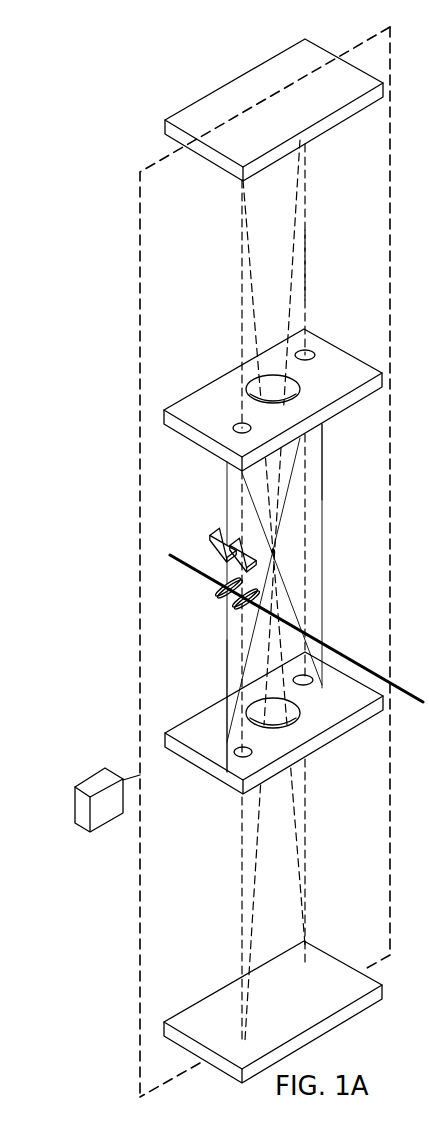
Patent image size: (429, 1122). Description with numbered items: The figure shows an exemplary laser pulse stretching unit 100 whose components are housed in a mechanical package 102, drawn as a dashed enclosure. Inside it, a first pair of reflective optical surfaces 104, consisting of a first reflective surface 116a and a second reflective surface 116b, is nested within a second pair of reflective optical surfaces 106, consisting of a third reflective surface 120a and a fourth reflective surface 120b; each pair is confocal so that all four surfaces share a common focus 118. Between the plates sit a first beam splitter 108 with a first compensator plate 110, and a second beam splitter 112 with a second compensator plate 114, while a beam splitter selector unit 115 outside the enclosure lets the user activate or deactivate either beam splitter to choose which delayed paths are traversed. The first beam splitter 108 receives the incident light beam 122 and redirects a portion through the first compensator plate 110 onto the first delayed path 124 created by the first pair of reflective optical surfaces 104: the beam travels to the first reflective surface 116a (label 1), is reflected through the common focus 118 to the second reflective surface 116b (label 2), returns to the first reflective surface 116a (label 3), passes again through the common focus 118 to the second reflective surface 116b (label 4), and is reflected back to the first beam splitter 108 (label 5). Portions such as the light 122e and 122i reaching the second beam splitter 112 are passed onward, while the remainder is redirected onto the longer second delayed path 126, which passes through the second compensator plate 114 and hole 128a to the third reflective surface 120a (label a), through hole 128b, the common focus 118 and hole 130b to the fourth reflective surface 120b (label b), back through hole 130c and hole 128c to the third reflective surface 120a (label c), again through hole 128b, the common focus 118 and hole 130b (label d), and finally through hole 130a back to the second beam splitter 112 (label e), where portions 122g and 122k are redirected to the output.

The laser pulse stretching unit 100 is at (233, 562).
The mechanical package 102 is at (139, 212).
The first pair of reflective optical surfaces 104 is at (236, 560).
The second pair of reflective optical surfaces 106 is at (291, 559).
The first beam splitter 108 is at (216, 598).
The first compensator plate 110 is at (212, 546).
The second beam splitter 112 is at (240, 607).
The second compensator plate 114 is at (240, 537).
The beam splitter selector unit 115 is at (103, 823).
The first reflective surface 116a is at (347, 352).
The second reflective surface 116b is at (178, 762).
The common focus 118 is at (278, 554).
The third reflective surface 120a is at (200, 157).
The fourth reflective surface 120b is at (202, 1002).
The incident light beam 122 is at (292, 628).
The portion of the incident light beam 122e is at (298, 628).
The portion of the incident light beam 122g is at (298, 628).
The portion of the incident light beam 122i is at (298, 628).
The portion of the incident light beam 122k is at (178, 592).
The first delayed path 124 is at (323, 440).
The second delayed path 126 is at (306, 252).
The hole 128a is at (236, 424).
The hole 128b is at (272, 377).
The hole 128c is at (306, 350).
The hole 130a is at (234, 756).
The hole 130b is at (303, 717).
The hole 130c is at (310, 686).
The second delayed path segment a is at (242, 253).
The second delayed path segment b is at (256, 272).
The second delayed path segment c is at (306, 183).
The second delayed path segment d is at (291, 218).
The second delayed path segment e is at (240, 908).
The first delayed path segment 1 is at (226, 480).
The first delayed path segment 2 is at (290, 591).
The first delayed path segment 3 is at (323, 470).
The first delayed path segment 4 is at (289, 497).
The first delayed path segment 5 is at (226, 679).